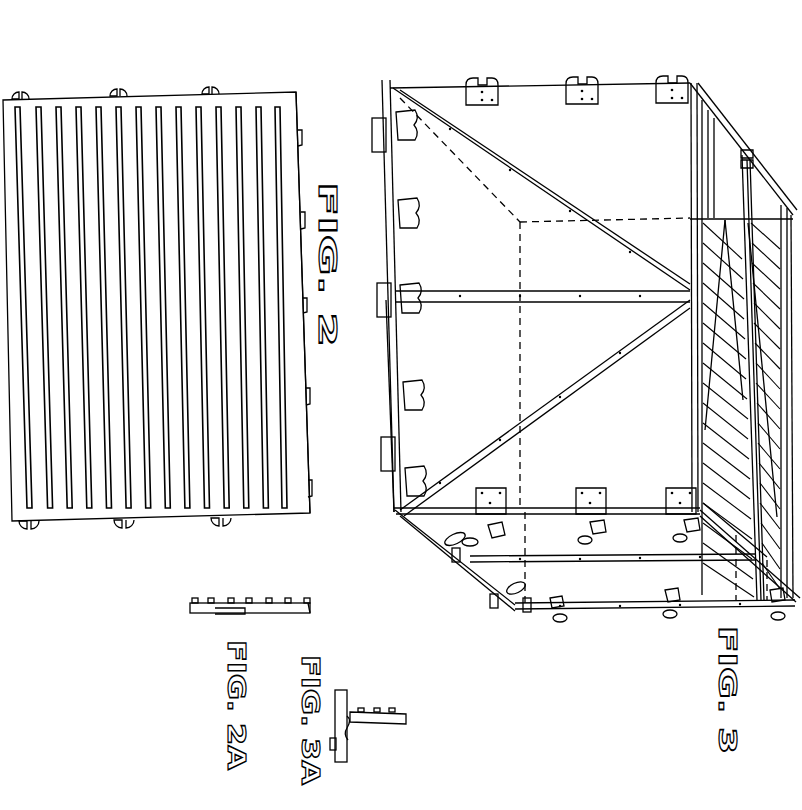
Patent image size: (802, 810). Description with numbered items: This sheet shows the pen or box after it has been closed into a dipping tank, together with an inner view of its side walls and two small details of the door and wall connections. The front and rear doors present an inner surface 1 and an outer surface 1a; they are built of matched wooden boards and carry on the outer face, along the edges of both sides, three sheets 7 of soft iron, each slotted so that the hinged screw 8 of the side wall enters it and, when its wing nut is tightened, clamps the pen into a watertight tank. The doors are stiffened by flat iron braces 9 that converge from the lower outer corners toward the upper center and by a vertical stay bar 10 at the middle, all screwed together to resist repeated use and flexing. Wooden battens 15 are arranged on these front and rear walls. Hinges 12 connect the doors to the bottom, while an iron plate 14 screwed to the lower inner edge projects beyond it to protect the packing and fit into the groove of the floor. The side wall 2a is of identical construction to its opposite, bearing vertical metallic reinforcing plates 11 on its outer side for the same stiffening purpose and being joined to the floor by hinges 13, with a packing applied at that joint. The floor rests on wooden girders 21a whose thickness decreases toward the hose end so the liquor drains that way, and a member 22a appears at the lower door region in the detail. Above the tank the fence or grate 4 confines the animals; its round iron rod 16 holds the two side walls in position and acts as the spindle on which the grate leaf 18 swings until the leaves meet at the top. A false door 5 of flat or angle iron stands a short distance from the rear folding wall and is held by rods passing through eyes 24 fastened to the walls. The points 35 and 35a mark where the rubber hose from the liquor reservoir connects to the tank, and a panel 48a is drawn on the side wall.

In FIG. 3A, the inner surface of the front and rear doors 1 is at (396, 725).
In FIG. 3, the inner surface of the front and rear doors 1 is at (541, 297).
In FIG. 2, the outer surface of the front and rear doors 1a is at (170, 516).
In FIG. 2A, the outer surface of the front and rear doors 1a is at (196, 616).
In FIG. 3, the side wall 2a is at (712, 118).
In FIG. 3, the fence or grate 4 is at (724, 325).
In FIG. 3, the false door 5 is at (392, 408).
In FIG. 2, the sheets of soft iron 7 is at (20, 90).
In FIG. 2A, the sheets of soft iron 7 is at (248, 615).
In FIG. 3, the sheets of soft iron 7 is at (470, 78).
In FIG. 3, the hinged screw 8 is at (675, 625).
In FIG. 3, the braces 9 is at (575, 214).
In FIG. 3, the stay bar 10 is at (540, 291).
In FIG. 3, the metallic reinforcing plates 11 is at (550, 516).
In FIG. 3A, the hinges 12 is at (369, 708).
In FIG. 3, the hinges 12 is at (415, 200).
In FIG. 3, the hinges 13 is at (423, 522).
In FIG. 2, the iron plate 14 is at (302, 146).
In FIG. 2A, the iron plate 14 is at (312, 604).
In FIG. 3A, the iron plate 14 is at (333, 744).
In FIG. 2, the wooden battens 15 is at (75, 108).
In FIG. 2A, the wooden battens 15 is at (231, 598).
In FIG. 3, the round iron rod 16 is at (755, 185).
In FIG. 3, the leaf of the grate 18 is at (708, 165).
In FIG. 3, the wooden girders 21a is at (372, 136).
In FIG. 3A, the edge member 22a is at (342, 710).
In FIG. 3A, the eyes 24 is at (350, 735).
In FIG. 3, the eyes 24 is at (743, 190).
In FIG. 3, the point of connection of the rubber hose 35 is at (450, 545).
In FIG. 3, the point of connection of the rubber hose 35a is at (512, 600).
In FIG. 3, the mesh panel 48a is at (743, 410).